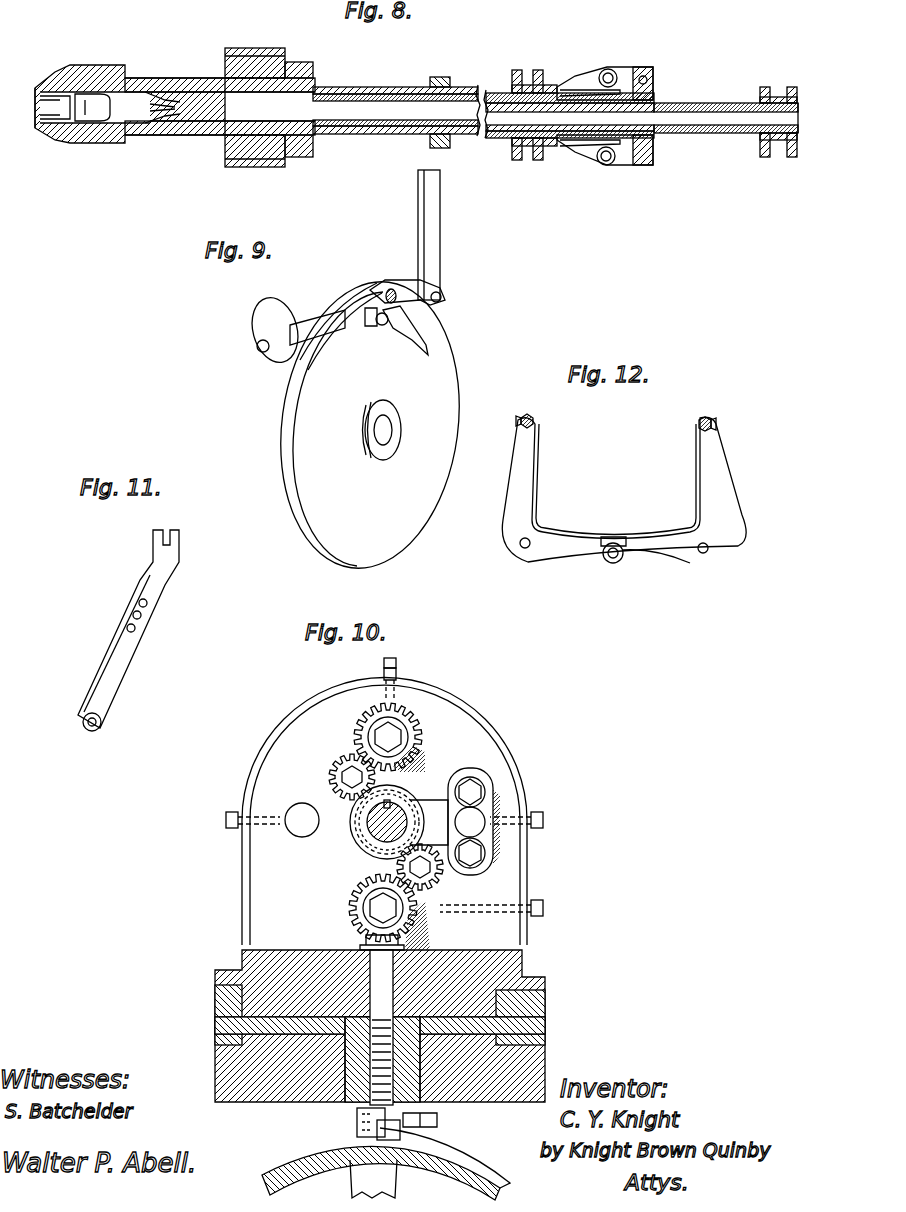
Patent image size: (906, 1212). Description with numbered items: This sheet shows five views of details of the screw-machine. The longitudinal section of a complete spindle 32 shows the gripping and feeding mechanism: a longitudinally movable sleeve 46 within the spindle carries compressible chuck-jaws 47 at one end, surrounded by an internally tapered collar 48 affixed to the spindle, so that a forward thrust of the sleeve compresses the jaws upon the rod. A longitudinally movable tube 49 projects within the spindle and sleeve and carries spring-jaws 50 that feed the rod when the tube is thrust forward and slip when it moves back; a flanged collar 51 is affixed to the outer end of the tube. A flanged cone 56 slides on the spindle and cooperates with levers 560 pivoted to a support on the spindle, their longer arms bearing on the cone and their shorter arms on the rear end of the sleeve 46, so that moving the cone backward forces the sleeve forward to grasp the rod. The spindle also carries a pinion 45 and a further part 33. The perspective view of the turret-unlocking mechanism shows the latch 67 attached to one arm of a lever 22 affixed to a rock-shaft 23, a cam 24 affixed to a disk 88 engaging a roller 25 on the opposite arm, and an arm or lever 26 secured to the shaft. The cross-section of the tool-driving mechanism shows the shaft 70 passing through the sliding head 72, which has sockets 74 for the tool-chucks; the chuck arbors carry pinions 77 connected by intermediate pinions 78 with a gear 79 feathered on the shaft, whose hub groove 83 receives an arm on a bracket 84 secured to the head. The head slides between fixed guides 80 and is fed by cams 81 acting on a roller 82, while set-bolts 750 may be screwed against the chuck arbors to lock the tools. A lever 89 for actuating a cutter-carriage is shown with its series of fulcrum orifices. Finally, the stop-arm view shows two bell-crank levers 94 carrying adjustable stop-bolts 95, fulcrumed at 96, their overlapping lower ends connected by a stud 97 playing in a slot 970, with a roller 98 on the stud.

In FIG. 9, the lever 22 is at (405, 280).
In FIG. 9, the rock-shaft 23 is at (305, 310).
In FIG. 9, the cam 24 is at (400, 330).
In FIG. 9, the roller 25 is at (368, 327).
In FIG. 9, the arm or lever 26 is at (256, 325).
In FIG. 8, the spindle 32 is at (175, 78).
In FIG. 8, the nut 33 is at (256, 48).
In FIG. 8, the pinion 45 is at (318, 62).
In FIG. 8, the sleeve 46 is at (145, 135).
In FIG. 8, the chuck-jaws 47 is at (52, 130).
In FIG. 8, the internally tapered collar 48 is at (48, 80).
In FIG. 8, the tube 49 is at (352, 90).
In FIG. 8, the spring-jaws 50 is at (138, 75).
In FIG. 8, the flanged collar 51 is at (770, 92).
In FIG. 8, the flanged cone 56 is at (532, 72).
In FIG. 8, the levers 560 is at (590, 82).
In FIG. 9, the latch 67 is at (443, 230).
In FIG. 10, the shaft 70 is at (375, 840).
In FIG. 10, the sliding head 72 is at (470, 735).
In FIG. 10, the sockets or bearings 74 is at (296, 803).
In FIG. 10, the pinion 77 is at (410, 712).
In FIG. 10, the intermediate pinions 78 is at (345, 770).
In FIG. 10, the gear 79 is at (420, 790).
In FIG. 10, the fixed guides 80 is at (230, 968).
In FIG. 10, the cams 81 is at (468, 1168).
In FIG. 10, the roller 82 is at (357, 1120).
In FIG. 10, the groove 83 is at (352, 832).
In FIG. 10, the bracket 84 is at (495, 800).
In FIG. 9, the disk 88 is at (436, 392).
In FIG. 11, the lever 89 is at (113, 672).
In FIG. 12, the bell-crank levers 94 is at (527, 466).
In FIG. 12, the adjustable stop-bolts 95 is at (516, 421).
In FIG. 12, the fulcrum 96 is at (520, 548).
In FIG. 12, the stud 97 is at (622, 560).
In FIG. 12, the roller 98 is at (608, 562).
In FIG. 12, the slot 970 is at (680, 560).
In FIG. 10, the set-bolts 750 is at (382, 665).